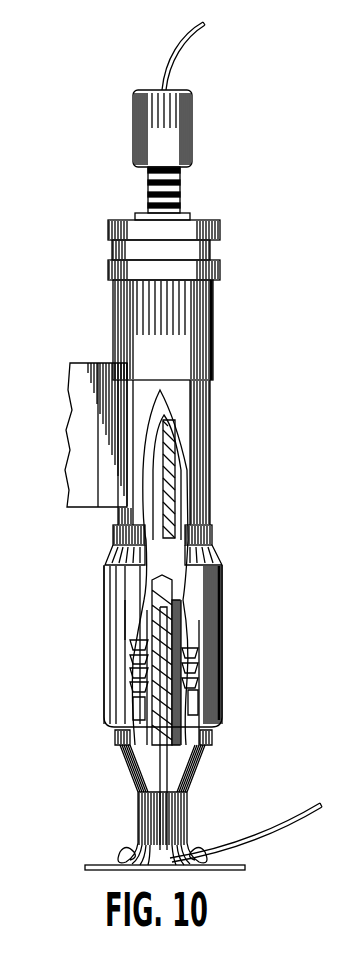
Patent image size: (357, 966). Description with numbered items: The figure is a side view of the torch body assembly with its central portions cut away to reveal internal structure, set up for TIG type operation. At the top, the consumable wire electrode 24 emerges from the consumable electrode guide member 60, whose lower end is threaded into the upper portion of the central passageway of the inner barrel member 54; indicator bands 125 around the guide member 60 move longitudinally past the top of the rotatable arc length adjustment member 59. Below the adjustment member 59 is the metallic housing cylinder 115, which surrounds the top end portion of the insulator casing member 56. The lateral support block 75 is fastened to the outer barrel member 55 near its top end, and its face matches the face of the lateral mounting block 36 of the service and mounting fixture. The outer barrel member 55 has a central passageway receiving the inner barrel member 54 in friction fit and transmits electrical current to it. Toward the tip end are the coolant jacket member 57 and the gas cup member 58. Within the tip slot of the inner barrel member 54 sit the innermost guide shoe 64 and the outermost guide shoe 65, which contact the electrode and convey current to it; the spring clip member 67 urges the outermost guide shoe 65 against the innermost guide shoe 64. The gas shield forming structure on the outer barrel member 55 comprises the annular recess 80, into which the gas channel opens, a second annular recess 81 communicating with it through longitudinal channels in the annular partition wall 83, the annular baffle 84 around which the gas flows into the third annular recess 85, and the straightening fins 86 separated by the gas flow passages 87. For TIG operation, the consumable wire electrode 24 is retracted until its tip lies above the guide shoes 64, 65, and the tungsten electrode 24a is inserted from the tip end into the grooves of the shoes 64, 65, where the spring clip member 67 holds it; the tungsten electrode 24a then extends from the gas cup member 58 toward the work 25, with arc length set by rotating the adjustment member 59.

The consumable wire electrode 24 is at (182, 43).
The tungsten electrode 24a is at (163, 790).
The work 25 is at (95, 865).
The lateral mounting block 36 is at (82, 375).
The inner barrel member 54 is at (180, 753).
The outer barrel member 55 is at (205, 725).
The insulator casing member 56 is at (197, 487).
The coolant jacket member 57 is at (207, 577).
The gas cup member 58 is at (193, 777).
The arc length adjustment member 59 is at (221, 232).
The consumable electrode guide member 60 is at (176, 130).
The innermost guide shoe 64 is at (150, 737).
The outermost guide shoe 65 is at (172, 718).
The spring clip member 67 is at (193, 680).
The lateral support block 75 is at (110, 373).
The annular recess 80 is at (191, 654).
The annular recess 81 is at (182, 668).
The annular partition wall 83 is at (130, 658).
The annular baffle 84 is at (133, 678).
The third annular recess 85 is at (193, 692).
The straightening fins 86 is at (137, 705).
The gas flow passages 87 is at (140, 717).
The metallic housing cylinder 115 is at (203, 313).
The indicator bands 125 is at (182, 190).